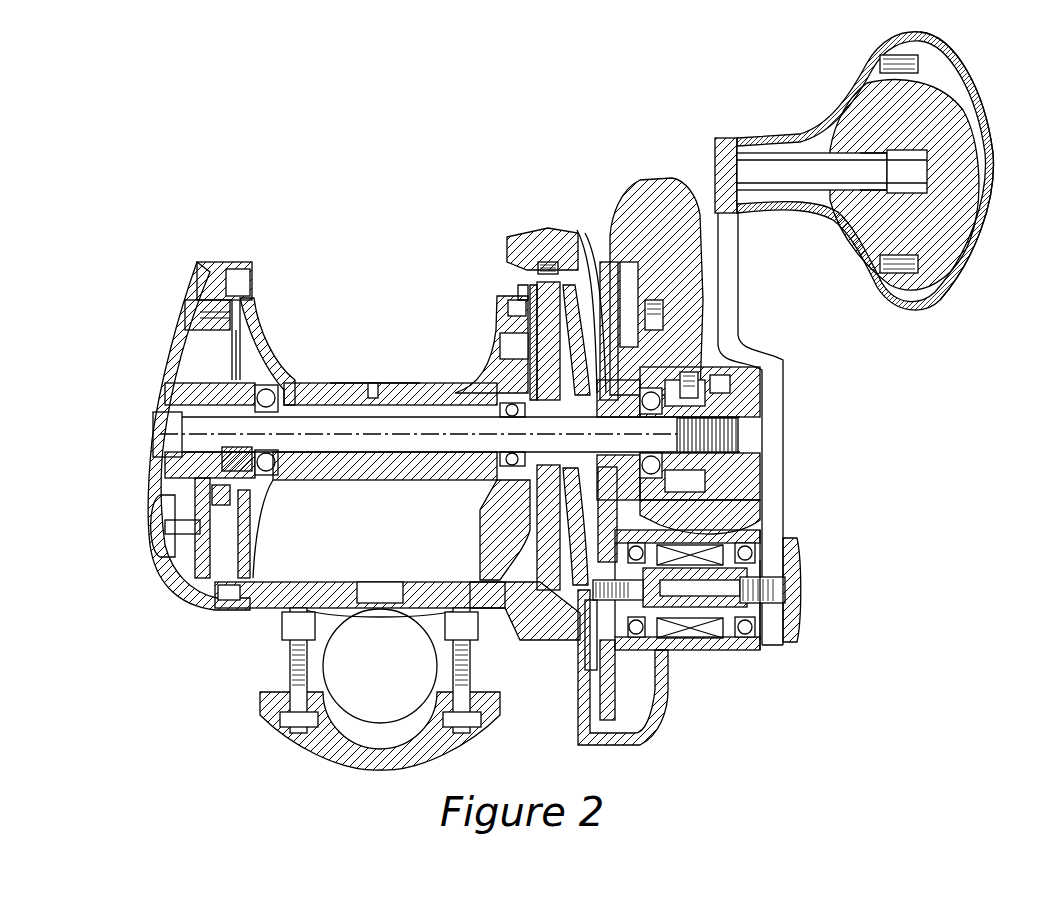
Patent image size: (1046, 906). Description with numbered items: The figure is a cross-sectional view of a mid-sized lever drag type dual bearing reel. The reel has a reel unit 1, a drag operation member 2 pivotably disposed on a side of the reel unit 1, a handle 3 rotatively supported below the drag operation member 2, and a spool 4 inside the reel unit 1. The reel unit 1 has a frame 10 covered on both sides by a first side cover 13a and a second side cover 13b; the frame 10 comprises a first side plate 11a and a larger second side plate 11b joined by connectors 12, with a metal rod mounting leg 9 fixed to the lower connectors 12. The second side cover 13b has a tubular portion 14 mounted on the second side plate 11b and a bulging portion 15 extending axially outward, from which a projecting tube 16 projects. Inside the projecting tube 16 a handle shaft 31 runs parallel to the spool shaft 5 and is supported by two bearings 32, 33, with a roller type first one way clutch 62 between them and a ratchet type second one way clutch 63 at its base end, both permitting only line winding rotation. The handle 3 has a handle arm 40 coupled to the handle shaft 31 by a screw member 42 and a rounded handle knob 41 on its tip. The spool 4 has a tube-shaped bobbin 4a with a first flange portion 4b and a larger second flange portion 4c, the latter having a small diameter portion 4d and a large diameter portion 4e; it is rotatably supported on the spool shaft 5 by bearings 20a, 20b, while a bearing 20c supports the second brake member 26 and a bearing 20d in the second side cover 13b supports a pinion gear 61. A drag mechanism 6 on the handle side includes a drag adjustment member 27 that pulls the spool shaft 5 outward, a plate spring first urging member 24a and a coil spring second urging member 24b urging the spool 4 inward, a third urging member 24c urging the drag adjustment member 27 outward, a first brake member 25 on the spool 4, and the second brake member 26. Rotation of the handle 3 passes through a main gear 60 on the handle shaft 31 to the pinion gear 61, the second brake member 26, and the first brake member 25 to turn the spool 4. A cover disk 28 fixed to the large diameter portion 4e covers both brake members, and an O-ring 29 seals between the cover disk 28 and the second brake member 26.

The reel unit 1 is at (549, 205).
The drag operation member 2 is at (655, 172).
The handle 3 is at (788, 117).
The spool 4 is at (372, 300).
The bobbin 4a is at (352, 382).
The first flange portion 4b is at (257, 327).
The second flange portion 4c is at (493, 360).
The small diameter portion 4d is at (527, 289).
The large diameter portion 4e is at (557, 260).
The spool shaft 5 is at (740, 435).
The drag mechanism 6 is at (687, 207).
The rod mounting leg 9 is at (470, 677).
The frame 10 is at (280, 233).
The first side plate 11a is at (238, 262).
The second side plate 11b is at (533, 247).
The connectors 12 is at (253, 603).
The first side cover 13a is at (197, 262).
The second side cover 13b is at (607, 257).
The tubular portion 14 is at (578, 322).
The bulging portion 15 is at (625, 750).
The projecting tube 16 is at (725, 650).
The bearing 20a is at (263, 487).
The bearing 20b is at (505, 450).
The bearing 20c is at (537, 530).
The bearing 20d is at (660, 500).
The first urging member 24a is at (205, 395).
The second urging member 24b is at (510, 415).
The third urging member 24c is at (743, 475).
The first brake member 25 is at (517, 290).
The second brake member 26 is at (540, 313).
The drag adjustment member 27 is at (747, 378).
The cover disk 28 is at (572, 345).
The O-ring 29 is at (717, 370).
The handle shaft 31 is at (692, 600).
The bearing 32 is at (640, 660).
The bearing 33 is at (753, 643).
The handle arm 40 is at (738, 277).
The handle knob 41 is at (977, 87).
The screw member 42 is at (793, 582).
The main gear 60 is at (643, 713).
The pinion gear 61 is at (740, 370).
The first one way clutch 62 is at (720, 650).
The second one way clutch 63 is at (598, 665).